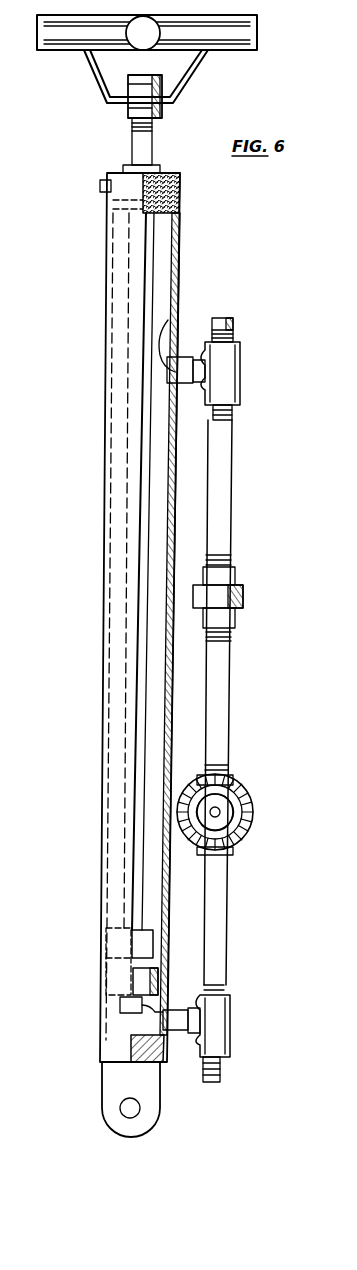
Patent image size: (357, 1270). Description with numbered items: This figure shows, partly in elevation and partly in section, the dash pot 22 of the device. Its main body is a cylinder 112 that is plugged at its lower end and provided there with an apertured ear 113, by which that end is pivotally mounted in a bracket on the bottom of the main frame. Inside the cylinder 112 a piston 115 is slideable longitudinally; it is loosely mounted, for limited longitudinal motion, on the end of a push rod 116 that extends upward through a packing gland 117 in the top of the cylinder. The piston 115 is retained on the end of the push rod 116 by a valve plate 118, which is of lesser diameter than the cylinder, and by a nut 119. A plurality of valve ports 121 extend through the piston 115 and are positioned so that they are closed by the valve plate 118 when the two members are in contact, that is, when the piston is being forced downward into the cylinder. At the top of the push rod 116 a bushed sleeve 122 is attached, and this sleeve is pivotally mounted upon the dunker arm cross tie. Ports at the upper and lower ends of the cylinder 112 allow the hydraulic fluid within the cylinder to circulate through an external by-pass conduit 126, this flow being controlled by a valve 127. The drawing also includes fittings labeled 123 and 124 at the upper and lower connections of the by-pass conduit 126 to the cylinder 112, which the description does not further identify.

The bushed sleeve 122 is at (230, 58).
The packing gland 117 is at (165, 178).
The upper valve 123 is at (178, 308).
The cylinder 112 is at (110, 621).
The dash pot 22 is at (114, 617).
The external by-pass conduit 126 is at (222, 700).
The valve 127 is at (250, 800).
The push rod 116 is at (145, 885).
The valve plate 118 is at (150, 931).
The valve ports 121 is at (150, 969).
The piston 115 is at (135, 975).
The nut 119 is at (130, 1020).
The apertured ear 113 is at (105, 1077).
The lower valve 124 is at (162, 1050).